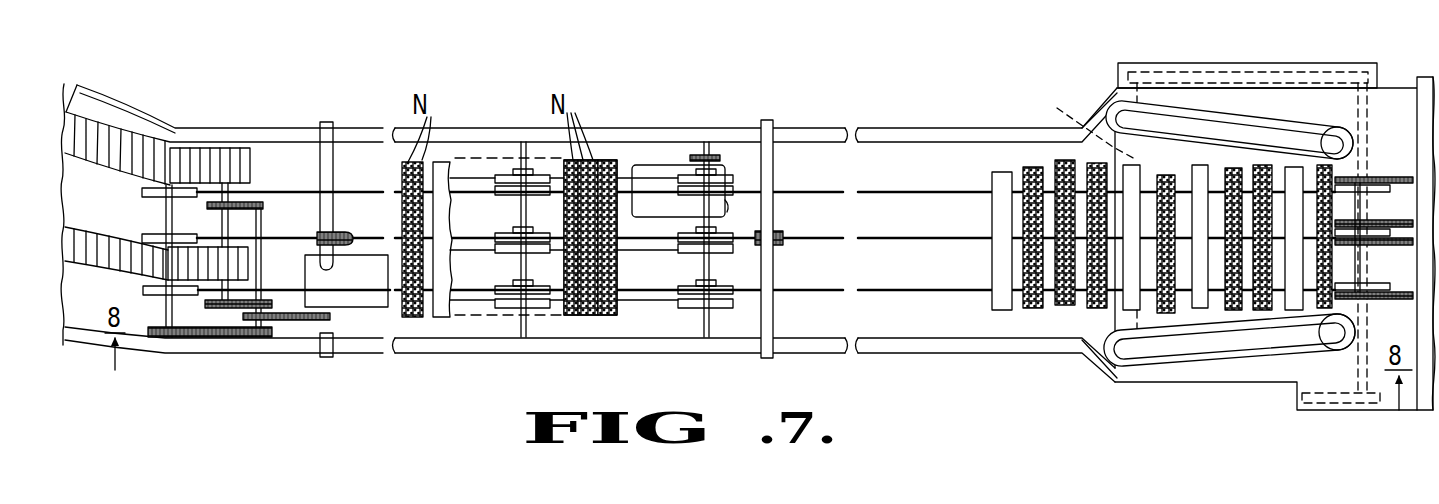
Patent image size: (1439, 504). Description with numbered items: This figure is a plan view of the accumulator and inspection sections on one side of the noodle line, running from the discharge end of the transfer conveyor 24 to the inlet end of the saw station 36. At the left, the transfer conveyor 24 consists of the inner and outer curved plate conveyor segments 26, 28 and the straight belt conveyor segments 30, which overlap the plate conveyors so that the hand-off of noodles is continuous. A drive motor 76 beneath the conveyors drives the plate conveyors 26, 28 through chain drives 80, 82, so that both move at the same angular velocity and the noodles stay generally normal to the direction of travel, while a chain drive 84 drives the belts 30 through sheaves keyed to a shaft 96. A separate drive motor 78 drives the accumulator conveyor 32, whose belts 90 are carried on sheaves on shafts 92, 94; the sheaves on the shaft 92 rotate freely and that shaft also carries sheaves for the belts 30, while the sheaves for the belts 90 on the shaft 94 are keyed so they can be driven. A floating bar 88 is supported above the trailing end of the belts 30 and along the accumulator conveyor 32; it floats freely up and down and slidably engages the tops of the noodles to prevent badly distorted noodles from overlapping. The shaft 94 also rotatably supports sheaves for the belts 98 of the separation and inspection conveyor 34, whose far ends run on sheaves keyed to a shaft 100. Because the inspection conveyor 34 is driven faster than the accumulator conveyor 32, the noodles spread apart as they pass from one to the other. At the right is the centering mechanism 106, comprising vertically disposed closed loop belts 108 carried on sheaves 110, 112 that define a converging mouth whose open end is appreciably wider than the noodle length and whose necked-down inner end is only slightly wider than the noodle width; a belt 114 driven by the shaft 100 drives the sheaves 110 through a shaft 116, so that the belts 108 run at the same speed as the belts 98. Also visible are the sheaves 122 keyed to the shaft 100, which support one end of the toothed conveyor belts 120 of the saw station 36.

The transfer conveyor 24 is at (101, 90).
The inner curved plate conveyor segment 26 is at (110, 142).
The outer curved plate conveyor segment 28 is at (104, 262).
The straight belt conveyor segments 30 is at (275, 188).
The accumulator conveyor 32 is at (623, 120).
The separation and inspection conveyor 34 is at (915, 116).
The saw station 36 is at (1420, 72).
The drive motor 76 is at (362, 303).
The drive motor 78 is at (727, 208).
The chain drive 80 is at (217, 205).
The chain drive 82 is at (208, 308).
The chain drive 84 is at (208, 337).
The floating bar 88 is at (348, 232).
The accumulator conveyor belts 90 is at (637, 183).
The shaft 92 is at (523, 270).
The shaft 94 is at (708, 266).
The shaft 96 is at (167, 307).
The inspection conveyor belts 98 is at (887, 190).
The shaft 100 is at (1362, 212).
The centering mechanism 106 is at (1110, 62).
The closed loop belts 108 is at (1218, 155).
The sheaves 110 is at (1108, 107).
The sheaves 112 is at (1322, 153).
The belt 114 is at (1268, 70).
The shaft 116 is at (1057, 108).
The toothed conveyor belts 120 is at (1402, 185).
The sheaves 122 is at (1377, 177).